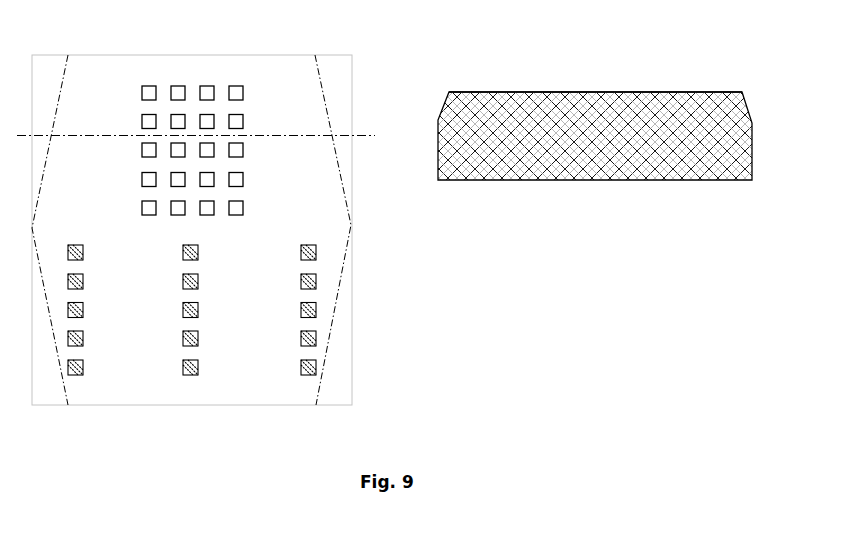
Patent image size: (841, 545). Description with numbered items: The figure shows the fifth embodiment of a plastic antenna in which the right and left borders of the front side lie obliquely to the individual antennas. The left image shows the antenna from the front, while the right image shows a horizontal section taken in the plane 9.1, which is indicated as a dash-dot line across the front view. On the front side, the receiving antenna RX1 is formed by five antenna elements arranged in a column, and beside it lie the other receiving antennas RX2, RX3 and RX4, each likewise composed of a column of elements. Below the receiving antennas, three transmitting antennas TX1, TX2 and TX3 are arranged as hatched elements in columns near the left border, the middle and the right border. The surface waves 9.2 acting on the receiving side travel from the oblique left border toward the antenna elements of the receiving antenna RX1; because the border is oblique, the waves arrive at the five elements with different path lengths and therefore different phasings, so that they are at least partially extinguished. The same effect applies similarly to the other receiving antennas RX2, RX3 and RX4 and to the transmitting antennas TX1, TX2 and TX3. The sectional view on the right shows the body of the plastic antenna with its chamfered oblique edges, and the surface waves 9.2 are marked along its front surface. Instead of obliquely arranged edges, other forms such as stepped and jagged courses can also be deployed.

The plane 9.1 is at (208, 137).
The surface waves 9.2 is at (148, 208).
The receiving antenna RX1 is at (142, 141).
The receiving antenna RX2 is at (175, 141).
The receiving antenna RX3 is at (209, 141).
The receiving antenna RX4 is at (243, 141).
The transmitting antenna TX1 is at (79, 320).
The transmitting antenna TX2 is at (190, 320).
The transmitting antenna TX3 is at (301, 320).